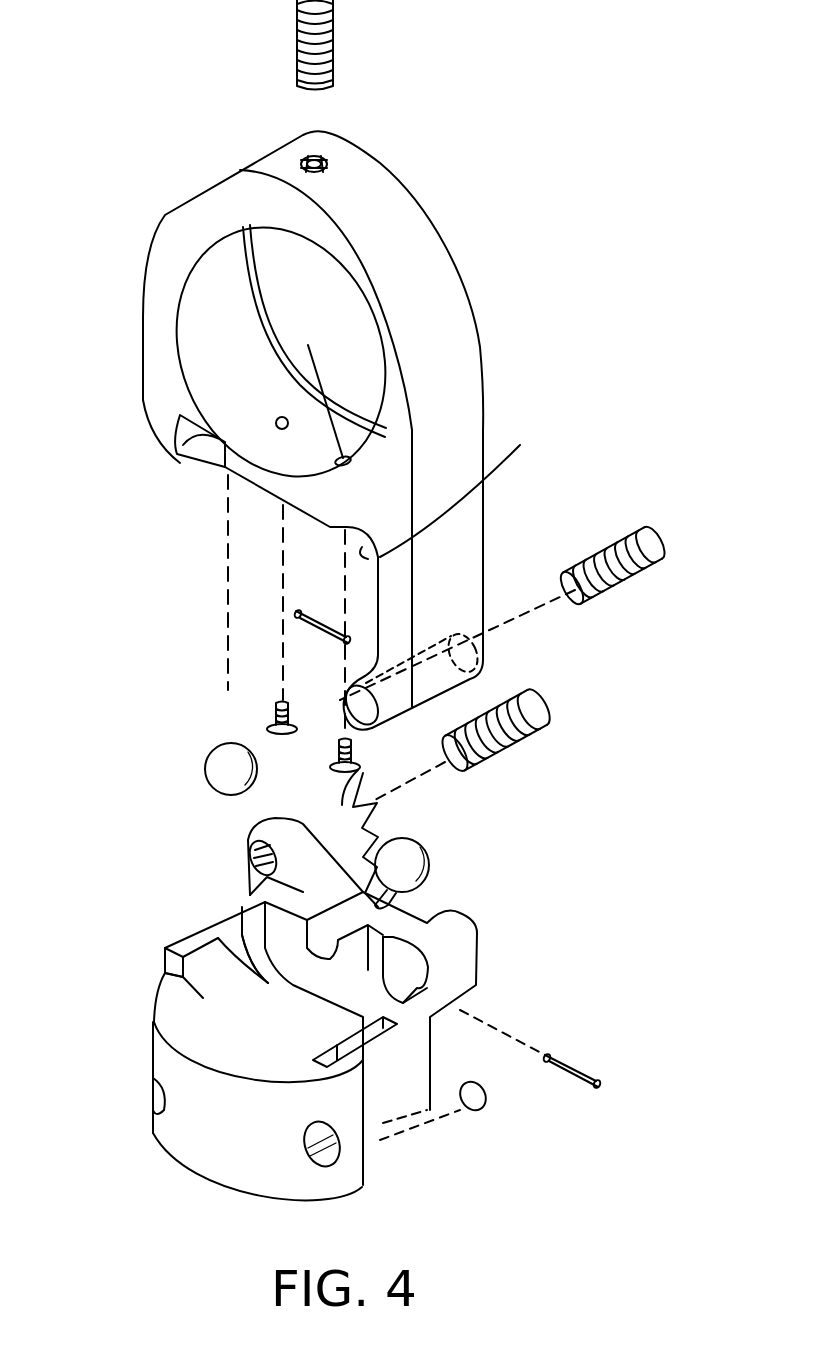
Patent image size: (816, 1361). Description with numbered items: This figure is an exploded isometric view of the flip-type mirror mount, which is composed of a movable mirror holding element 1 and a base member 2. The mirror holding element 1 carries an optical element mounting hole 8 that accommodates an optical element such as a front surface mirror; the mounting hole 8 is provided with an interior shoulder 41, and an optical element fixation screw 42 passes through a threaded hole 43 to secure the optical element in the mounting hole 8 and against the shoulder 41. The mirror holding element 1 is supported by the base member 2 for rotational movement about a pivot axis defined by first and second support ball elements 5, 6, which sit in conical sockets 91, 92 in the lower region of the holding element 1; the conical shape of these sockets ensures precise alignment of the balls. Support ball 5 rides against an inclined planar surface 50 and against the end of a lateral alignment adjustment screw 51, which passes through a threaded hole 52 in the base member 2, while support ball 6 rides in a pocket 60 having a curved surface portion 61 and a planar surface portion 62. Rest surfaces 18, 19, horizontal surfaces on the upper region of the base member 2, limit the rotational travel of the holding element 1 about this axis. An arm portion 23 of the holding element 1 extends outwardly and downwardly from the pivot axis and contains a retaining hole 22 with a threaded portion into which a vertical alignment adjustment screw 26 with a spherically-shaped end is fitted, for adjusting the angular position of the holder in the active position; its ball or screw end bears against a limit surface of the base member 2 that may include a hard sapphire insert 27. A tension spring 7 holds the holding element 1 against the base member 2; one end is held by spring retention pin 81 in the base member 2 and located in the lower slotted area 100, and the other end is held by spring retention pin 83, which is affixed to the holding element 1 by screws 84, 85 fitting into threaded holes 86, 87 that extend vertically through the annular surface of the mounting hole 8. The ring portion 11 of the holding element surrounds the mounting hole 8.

The movable mirror holding element 1 is at (415, 238).
The base member 2 is at (215, 1173).
The first support ball element 5 is at (215, 770).
The second support ball element 6 is at (418, 850).
The tension spring 7 is at (372, 808).
The optical element mounting hole 8 is at (205, 318).
The ring 11 is at (207, 260).
The rest surface 18 is at (190, 942).
The rest surface 19 is at (330, 1013).
The retaining hole 22 is at (450, 678).
The arm portion 23 is at (468, 528).
The vertical alignment adjustment screw 26 is at (623, 585).
The insert 27 is at (480, 1107).
The interior shoulder 41 is at (263, 332).
The optical element fixation screw 42 is at (328, 40).
The threaded hole 43 is at (326, 158).
The inclined planar surface 50 is at (194, 893).
The lateral alignment adjustment screw 51 is at (537, 708).
The threaded hole 52 is at (437, 647).
The pocket 60 is at (435, 972).
The curved surface portion 61 is at (458, 913).
The planar surface portion 62 is at (423, 980).
The spring retention pin 81 is at (577, 1067).
The spring retention pin 83 is at (343, 633).
The screw 84 is at (277, 722).
The screw 85 is at (330, 753).
The threaded hole 86 is at (279, 417).
The threaded hole 87 is at (308, 345).
The conical socket 91 is at (212, 452).
The conical socket 92 is at (448, 488).
The lower slotted area 100 is at (327, 947).